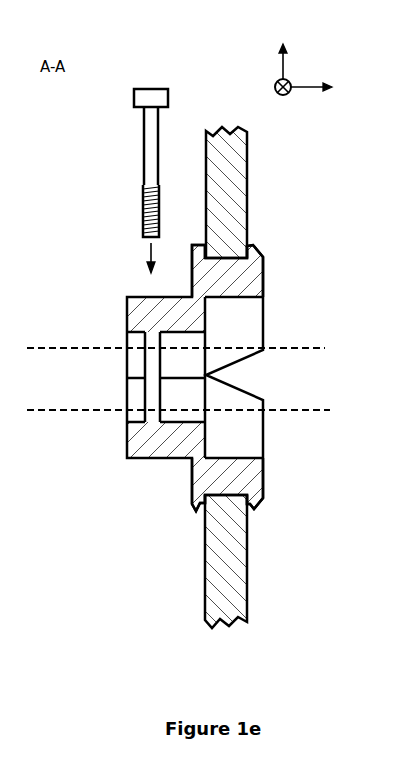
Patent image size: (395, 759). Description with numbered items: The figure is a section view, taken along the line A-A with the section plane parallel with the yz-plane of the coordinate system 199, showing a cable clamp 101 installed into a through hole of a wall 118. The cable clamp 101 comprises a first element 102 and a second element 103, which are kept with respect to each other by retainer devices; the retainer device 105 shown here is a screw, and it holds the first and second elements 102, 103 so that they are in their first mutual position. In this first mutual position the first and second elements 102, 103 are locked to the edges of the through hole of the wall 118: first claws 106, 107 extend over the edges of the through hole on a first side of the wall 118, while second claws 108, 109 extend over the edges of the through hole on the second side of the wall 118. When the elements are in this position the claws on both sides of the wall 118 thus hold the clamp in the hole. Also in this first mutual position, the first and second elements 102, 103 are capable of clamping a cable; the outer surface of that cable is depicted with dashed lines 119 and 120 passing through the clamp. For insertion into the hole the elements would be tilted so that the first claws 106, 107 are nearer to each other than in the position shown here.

The cable clamp 101 is at (122, 252).
The first element 102 is at (127, 317).
The second element 103 is at (158, 459).
The retainer device 105 is at (144, 175).
The first claw 106 is at (255, 247).
The first claw 107 is at (262, 503).
The second claw 108 is at (192, 248).
The second claw 109 is at (190, 503).
The wall 118 is at (248, 200).
The dashed line 119 is at (290, 348).
The dashed line 120 is at (283, 410).
The coordinate system 199 is at (327, 73).